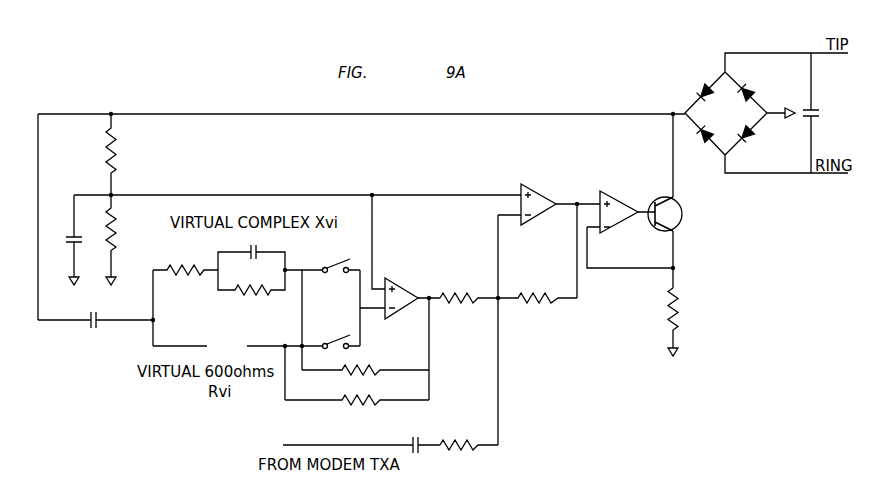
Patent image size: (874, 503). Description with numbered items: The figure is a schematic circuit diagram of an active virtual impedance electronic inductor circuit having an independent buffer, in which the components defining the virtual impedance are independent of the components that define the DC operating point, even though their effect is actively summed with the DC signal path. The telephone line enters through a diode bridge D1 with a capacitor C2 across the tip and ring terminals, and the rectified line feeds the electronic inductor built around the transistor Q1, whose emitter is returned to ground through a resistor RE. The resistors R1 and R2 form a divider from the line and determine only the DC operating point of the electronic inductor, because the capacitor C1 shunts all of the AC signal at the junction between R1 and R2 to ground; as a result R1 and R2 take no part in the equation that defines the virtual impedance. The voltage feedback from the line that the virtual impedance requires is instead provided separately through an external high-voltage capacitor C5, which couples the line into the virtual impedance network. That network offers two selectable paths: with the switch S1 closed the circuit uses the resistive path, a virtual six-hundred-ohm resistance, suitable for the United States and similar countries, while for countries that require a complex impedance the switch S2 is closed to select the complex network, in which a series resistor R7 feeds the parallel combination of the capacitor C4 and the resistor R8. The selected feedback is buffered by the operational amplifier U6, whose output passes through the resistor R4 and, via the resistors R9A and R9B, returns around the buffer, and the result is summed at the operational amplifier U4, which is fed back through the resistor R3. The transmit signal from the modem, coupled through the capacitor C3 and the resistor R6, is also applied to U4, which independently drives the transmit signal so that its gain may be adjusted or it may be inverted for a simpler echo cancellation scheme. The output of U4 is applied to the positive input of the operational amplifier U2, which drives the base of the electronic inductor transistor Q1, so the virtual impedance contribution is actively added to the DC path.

The resistor R1 is at (125, 154).
The resistor R2 is at (125, 240).
The capacitor C1 is at (64, 240).
The high-voltage capacitor C5 is at (95, 333).
The series resistor R7 is at (185, 258).
The capacitor C4 is at (251, 264).
The resistor R8 is at (251, 293).
The switch S2 is at (336, 255).
The switch S1 is at (336, 331).
The operational amplifier U6 is at (402, 291).
The resistor R4 is at (469, 286).
The resistor R3 is at (537, 309).
The operational amplifier U4 is at (539, 196).
The operational amplifier U2 is at (619, 208).
The electronic inductor transistor Q1 is at (674, 214).
The emitter resistor RE is at (687, 322).
The resistor R9B is at (365, 361).
The resistor R9A is at (357, 412).
The capacitor C3 is at (361, 435).
The resistor R6 is at (469, 457).
The diode bridge D1 is at (765, 113).
The capacitor C2 is at (824, 113).